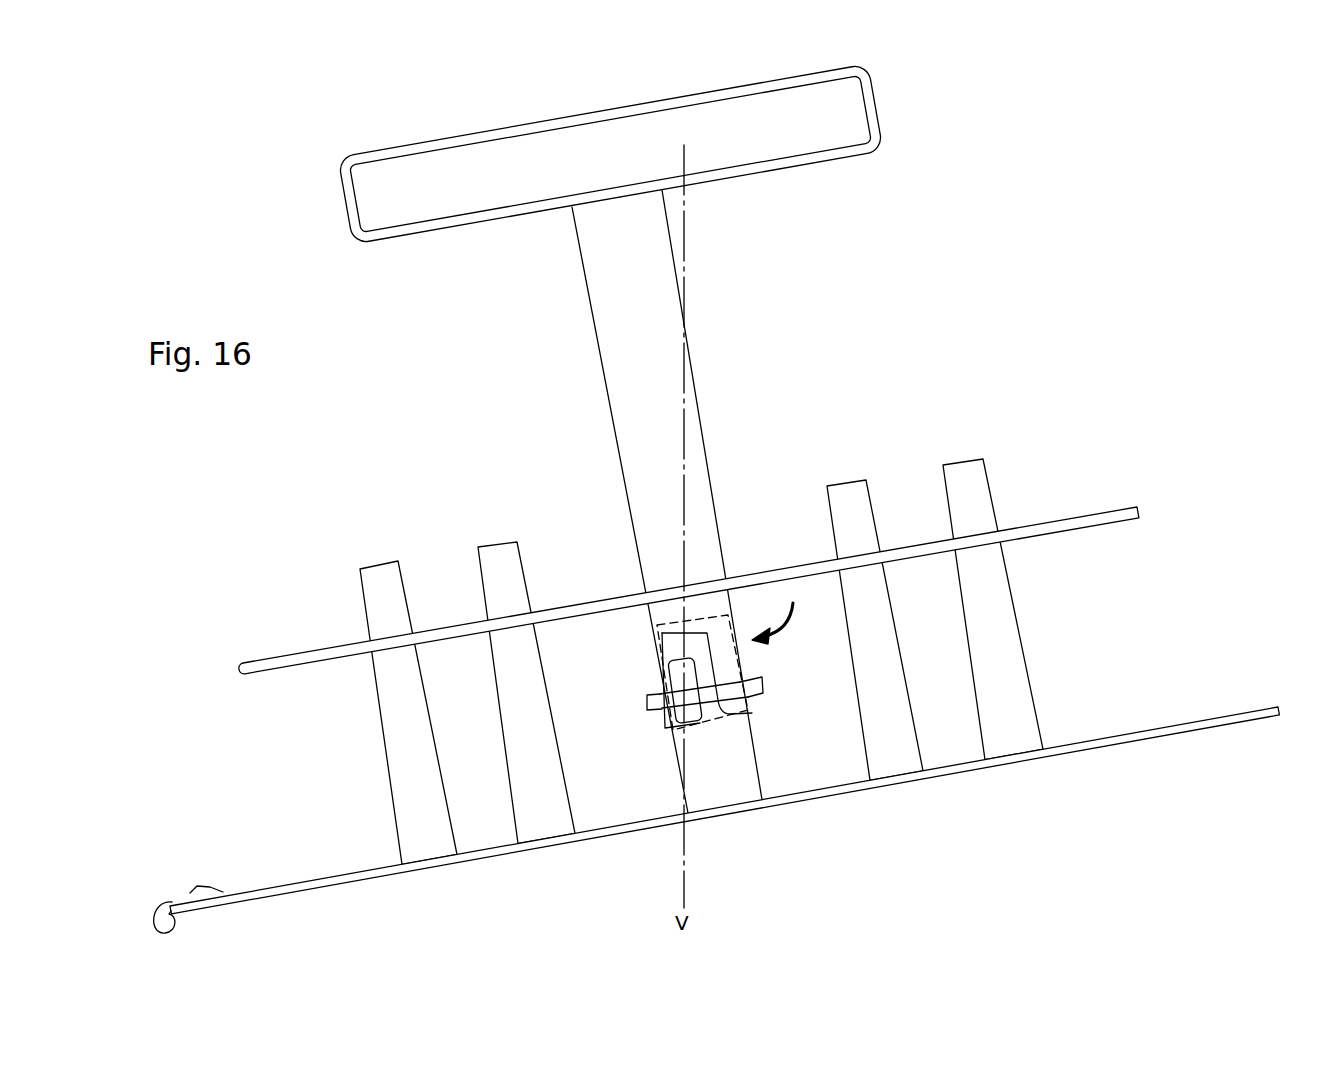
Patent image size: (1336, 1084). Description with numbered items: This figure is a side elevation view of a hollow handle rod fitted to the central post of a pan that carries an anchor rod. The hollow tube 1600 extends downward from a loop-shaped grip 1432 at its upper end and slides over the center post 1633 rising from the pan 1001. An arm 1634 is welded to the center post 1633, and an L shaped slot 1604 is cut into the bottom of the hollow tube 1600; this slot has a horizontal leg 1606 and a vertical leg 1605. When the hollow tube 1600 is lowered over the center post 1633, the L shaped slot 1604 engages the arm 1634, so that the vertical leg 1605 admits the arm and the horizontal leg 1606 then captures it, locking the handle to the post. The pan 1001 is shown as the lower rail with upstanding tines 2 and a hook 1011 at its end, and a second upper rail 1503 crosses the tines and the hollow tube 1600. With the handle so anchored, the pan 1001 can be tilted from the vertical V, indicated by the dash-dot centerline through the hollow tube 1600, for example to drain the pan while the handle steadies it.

The tine 2 is at (1017, 658).
The pan 1001 is at (1130, 735).
The hook 1011 is at (172, 902).
The handle 1432 is at (663, 108).
The upper rail 1503 is at (1047, 518).
The hollow tube 1600 is at (703, 445).
The L shaped slot 1604 is at (740, 655).
The vertical leg 1605 is at (670, 682).
The horizontal leg 1606 is at (648, 640).
The center post 1633 is at (737, 745).
The arm 1634 is at (740, 687).